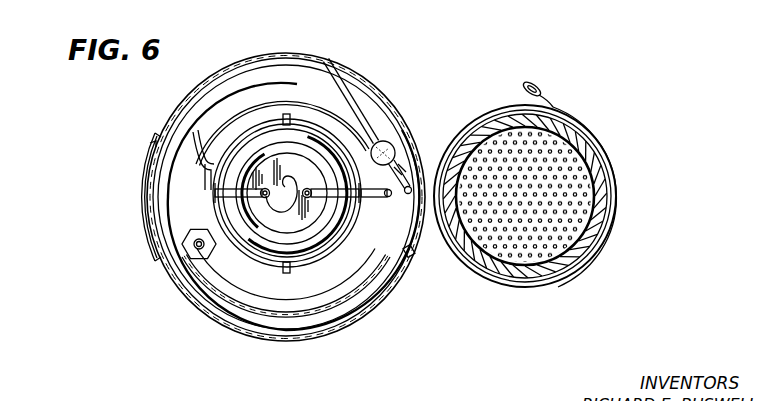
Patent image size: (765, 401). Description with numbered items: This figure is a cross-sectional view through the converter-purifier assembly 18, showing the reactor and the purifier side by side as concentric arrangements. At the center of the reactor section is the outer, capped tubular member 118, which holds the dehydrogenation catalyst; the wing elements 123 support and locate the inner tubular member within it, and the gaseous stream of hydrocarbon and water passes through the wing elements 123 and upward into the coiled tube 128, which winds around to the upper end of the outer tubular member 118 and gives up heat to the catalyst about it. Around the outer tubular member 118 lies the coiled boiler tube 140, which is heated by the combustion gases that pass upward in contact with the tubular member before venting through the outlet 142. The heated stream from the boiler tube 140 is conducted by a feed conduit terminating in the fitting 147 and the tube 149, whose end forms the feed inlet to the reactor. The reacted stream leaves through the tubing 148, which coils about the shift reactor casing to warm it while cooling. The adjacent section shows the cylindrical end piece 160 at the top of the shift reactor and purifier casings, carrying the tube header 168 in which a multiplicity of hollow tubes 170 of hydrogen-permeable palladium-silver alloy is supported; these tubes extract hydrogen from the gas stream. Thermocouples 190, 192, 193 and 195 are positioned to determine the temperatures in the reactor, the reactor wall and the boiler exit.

The pressure regulator assembly 18 is at (232, 268).
The outer tubular member 118 is at (290, 222).
The wing elements 123 is at (216, 210).
The coiled tube 128 is at (200, 295).
The coiled boiler tube 140 is at (312, 120).
The outlet 142 is at (145, 168).
The fitting 147 is at (212, 262).
The tubing 148 is at (548, 94).
The tube 149 is at (180, 252).
The cylindrical end piece 160 is at (592, 222).
The tube header 168 is at (582, 226).
The hollow tubes 170 is at (567, 166).
The thermocouple 190 is at (283, 215).
The thermocouple 192 is at (365, 205).
The thermocouple 193 is at (205, 184).
The thermocouple 195 is at (193, 133).